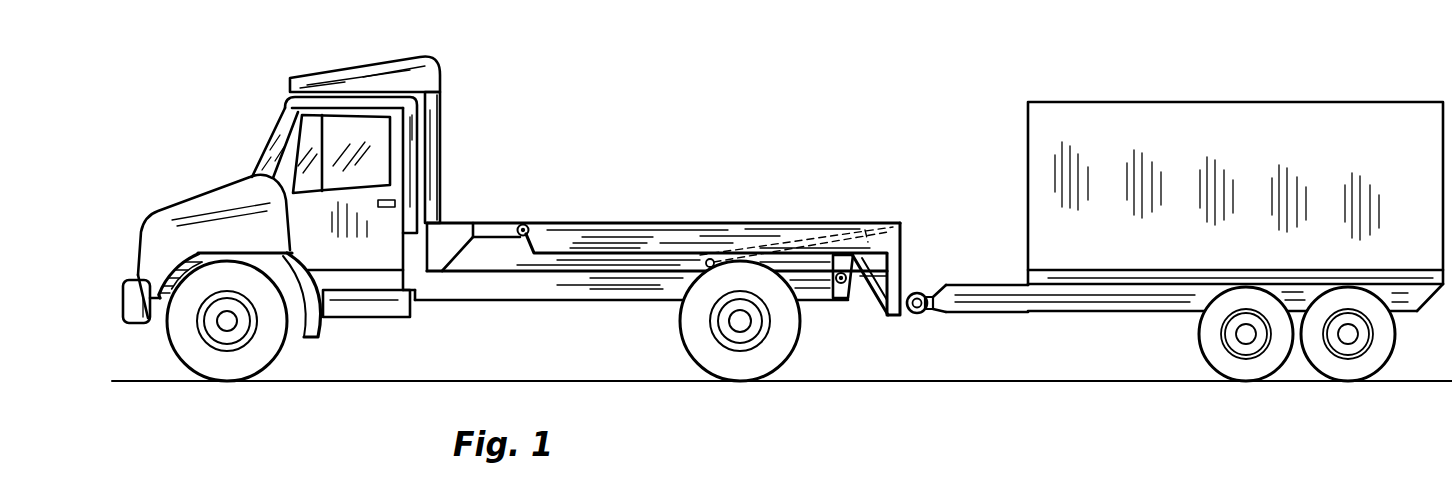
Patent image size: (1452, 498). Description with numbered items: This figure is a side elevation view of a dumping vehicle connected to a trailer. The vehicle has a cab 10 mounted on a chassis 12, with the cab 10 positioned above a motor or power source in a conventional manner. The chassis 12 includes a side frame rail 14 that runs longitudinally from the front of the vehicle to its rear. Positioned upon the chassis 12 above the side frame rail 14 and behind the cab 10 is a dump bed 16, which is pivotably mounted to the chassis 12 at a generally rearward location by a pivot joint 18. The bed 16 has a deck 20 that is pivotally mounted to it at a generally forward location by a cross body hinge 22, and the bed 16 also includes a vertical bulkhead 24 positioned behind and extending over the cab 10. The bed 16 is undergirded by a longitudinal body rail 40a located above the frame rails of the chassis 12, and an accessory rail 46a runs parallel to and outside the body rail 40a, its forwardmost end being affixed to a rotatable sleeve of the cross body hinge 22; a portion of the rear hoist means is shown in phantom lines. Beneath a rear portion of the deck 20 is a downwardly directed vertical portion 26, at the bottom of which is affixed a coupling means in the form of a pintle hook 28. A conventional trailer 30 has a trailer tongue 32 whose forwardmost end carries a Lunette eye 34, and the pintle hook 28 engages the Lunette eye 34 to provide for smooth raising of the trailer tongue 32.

The cab 10 is at (235, 163).
The chassis 12 is at (413, 273).
The side frame rail 14 is at (588, 280).
The dump bed 16 is at (457, 208).
The pivot joint 18 is at (843, 290).
The deck 20 is at (590, 230).
The cross body hinge 22 is at (522, 225).
The vertical bulkhead 24 is at (443, 100).
The vertical portion 26 is at (893, 272).
The pintle hook 28 is at (918, 315).
The trailer 30 is at (1385, 97).
The trailer tongue 32 is at (1000, 303).
The Lunette eye 34 is at (927, 293).
The longitudinal body rail 40a is at (495, 253).
The accessory rail 46a is at (677, 245).